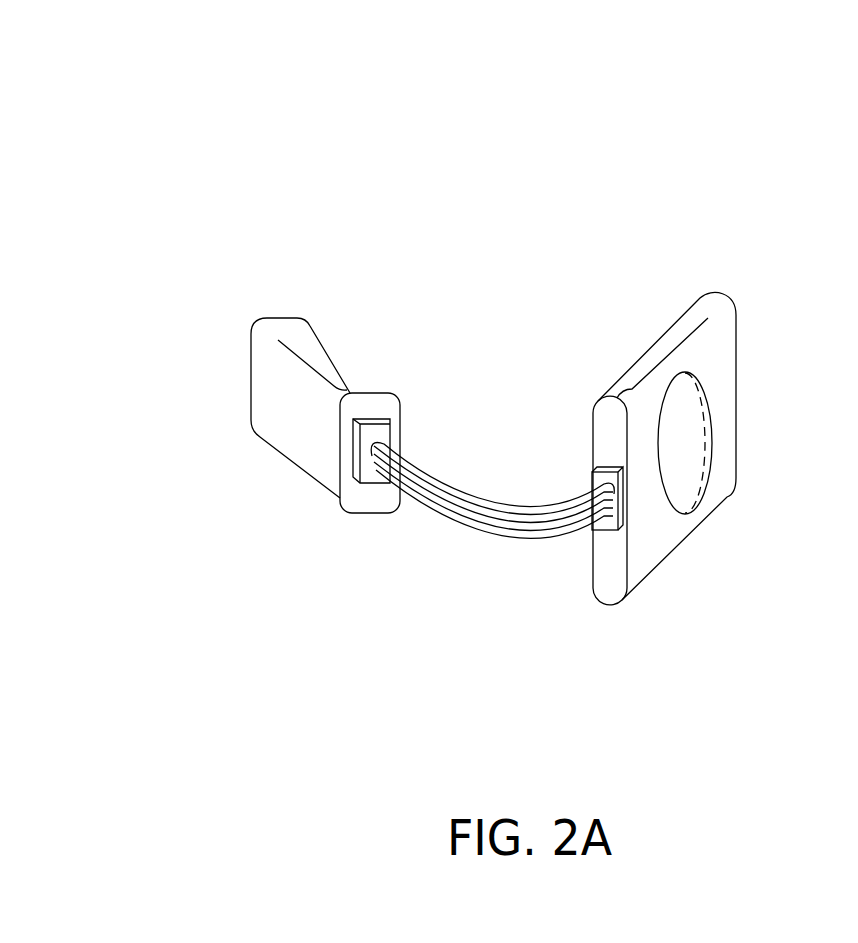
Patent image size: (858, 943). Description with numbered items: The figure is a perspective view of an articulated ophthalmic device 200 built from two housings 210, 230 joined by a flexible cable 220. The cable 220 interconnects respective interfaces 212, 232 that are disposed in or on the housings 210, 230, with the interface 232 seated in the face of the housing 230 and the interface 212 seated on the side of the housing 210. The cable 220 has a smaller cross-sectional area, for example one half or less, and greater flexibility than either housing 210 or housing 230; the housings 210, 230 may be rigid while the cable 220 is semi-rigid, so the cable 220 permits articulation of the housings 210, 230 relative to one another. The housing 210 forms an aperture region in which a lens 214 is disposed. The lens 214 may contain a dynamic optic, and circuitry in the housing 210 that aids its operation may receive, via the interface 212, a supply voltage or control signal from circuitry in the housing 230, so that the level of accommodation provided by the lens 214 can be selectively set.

The ophthalmic device 200 is at (170, 116).
The housing 210 is at (693, 312).
The interface 212 is at (605, 536).
The lens 214 is at (682, 482).
The flexible cable 220 is at (413, 508).
The housing 230 is at (280, 422).
The interface 232 is at (372, 415).